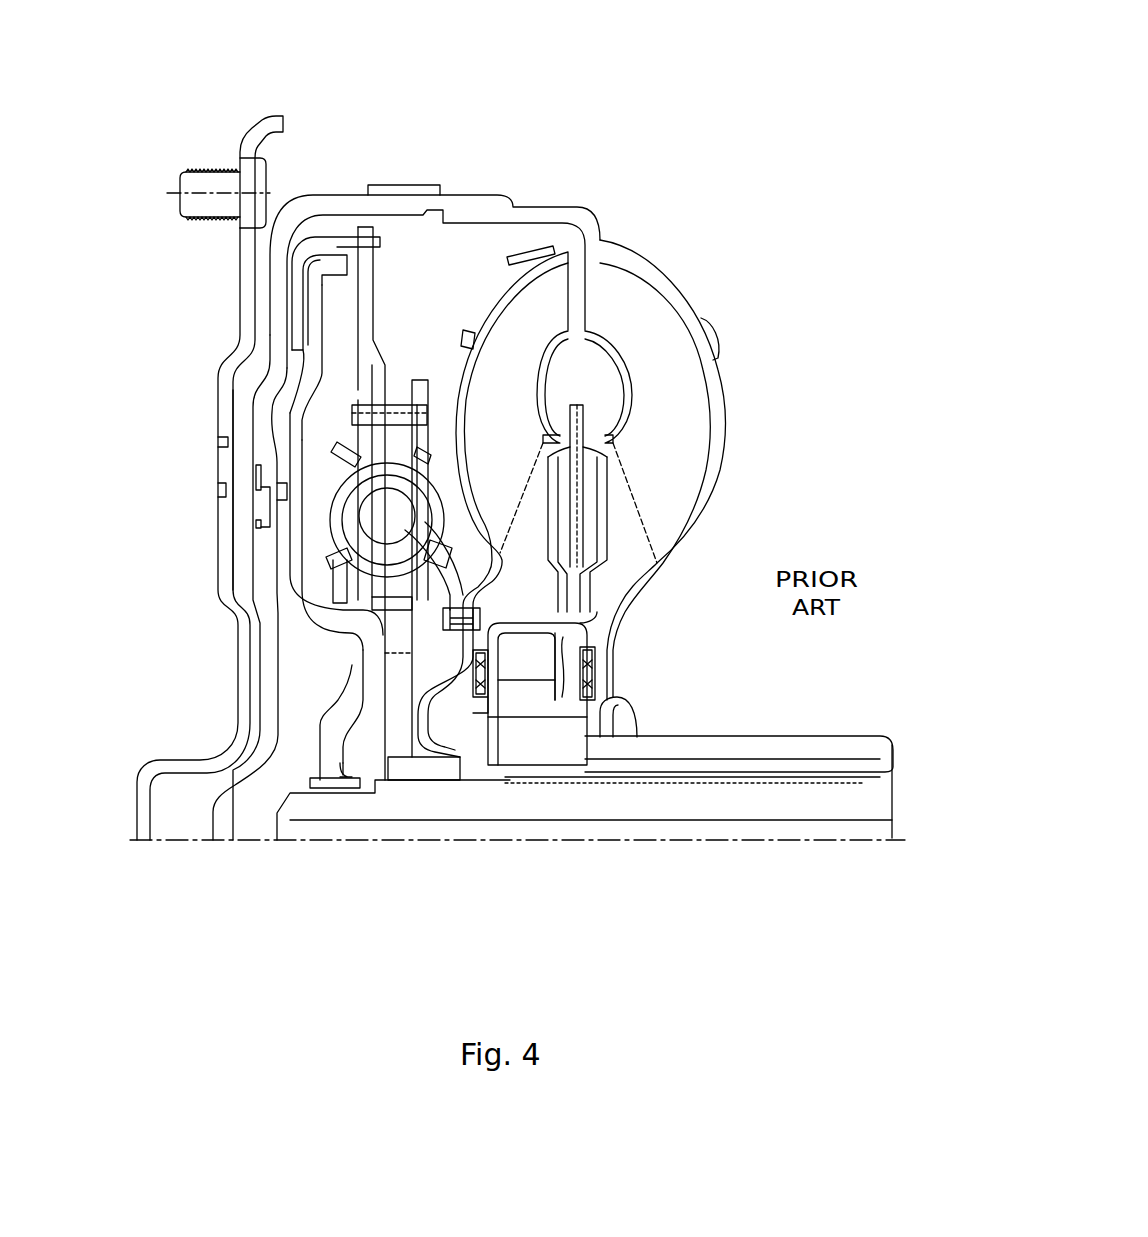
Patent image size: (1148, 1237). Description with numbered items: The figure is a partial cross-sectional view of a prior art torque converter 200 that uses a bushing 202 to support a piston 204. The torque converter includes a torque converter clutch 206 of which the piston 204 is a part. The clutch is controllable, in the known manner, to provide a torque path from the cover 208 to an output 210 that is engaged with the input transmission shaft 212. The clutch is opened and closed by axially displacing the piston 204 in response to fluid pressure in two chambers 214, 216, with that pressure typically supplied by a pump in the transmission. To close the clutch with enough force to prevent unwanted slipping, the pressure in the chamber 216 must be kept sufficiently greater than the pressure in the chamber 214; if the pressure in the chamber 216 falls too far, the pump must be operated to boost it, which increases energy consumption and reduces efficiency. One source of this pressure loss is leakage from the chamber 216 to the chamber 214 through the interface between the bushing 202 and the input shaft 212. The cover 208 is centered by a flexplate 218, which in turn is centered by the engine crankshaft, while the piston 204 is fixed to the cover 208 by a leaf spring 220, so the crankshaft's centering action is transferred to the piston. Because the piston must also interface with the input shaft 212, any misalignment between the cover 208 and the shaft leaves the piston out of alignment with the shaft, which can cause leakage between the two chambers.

The torque converter 200 is at (603, 98).
The bushing 202 is at (343, 783).
The piston 204 is at (360, 665).
The torque converter clutch 206 is at (312, 231).
The cover 208 is at (268, 313).
The output 210 is at (445, 803).
The input transmission shaft 212 is at (633, 806).
The chamber 214 is at (263, 565).
The chamber 216 is at (320, 427).
The flexplate 218 is at (250, 128).
The leaf spring 220 is at (260, 475).